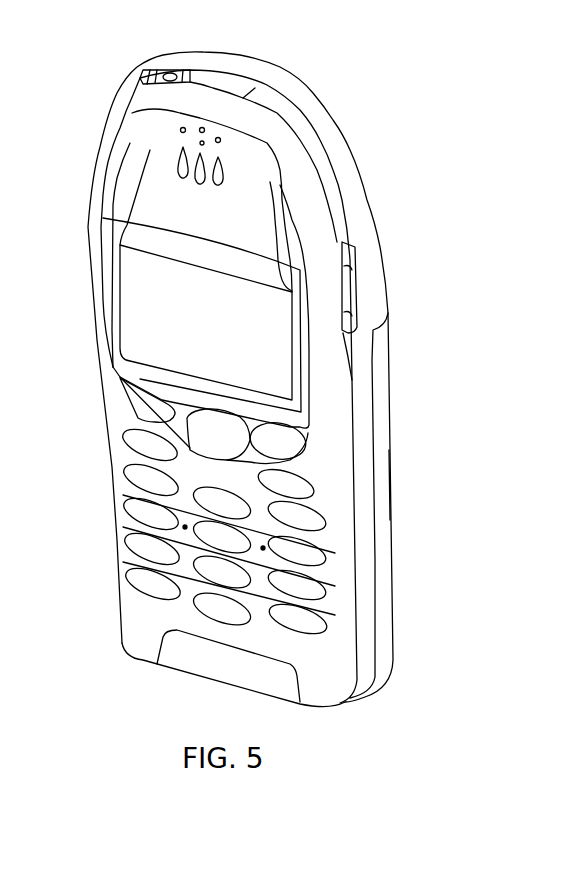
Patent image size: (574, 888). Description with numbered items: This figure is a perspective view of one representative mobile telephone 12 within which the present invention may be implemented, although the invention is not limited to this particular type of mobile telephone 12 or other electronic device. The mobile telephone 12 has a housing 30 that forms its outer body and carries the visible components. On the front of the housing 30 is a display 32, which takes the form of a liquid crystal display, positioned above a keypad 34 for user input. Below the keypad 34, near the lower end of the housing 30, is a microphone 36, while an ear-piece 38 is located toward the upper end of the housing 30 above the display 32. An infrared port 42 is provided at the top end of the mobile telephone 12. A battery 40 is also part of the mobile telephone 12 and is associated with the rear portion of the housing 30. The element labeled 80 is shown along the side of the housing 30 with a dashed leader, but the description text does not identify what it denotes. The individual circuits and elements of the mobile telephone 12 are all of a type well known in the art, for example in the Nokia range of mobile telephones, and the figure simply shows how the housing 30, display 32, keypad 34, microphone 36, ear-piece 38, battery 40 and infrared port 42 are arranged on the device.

The mobile telephone 12 is at (332, 58).
The housing 30 is at (356, 183).
The display 32 is at (273, 355).
The keypad 34 is at (298, 625).
The microphone 36 is at (177, 657).
The ear-piece 38 is at (178, 151).
The battery 40 is at (385, 607).
The infrared port 42 is at (221, 80).
The side portion 80 is at (392, 495).